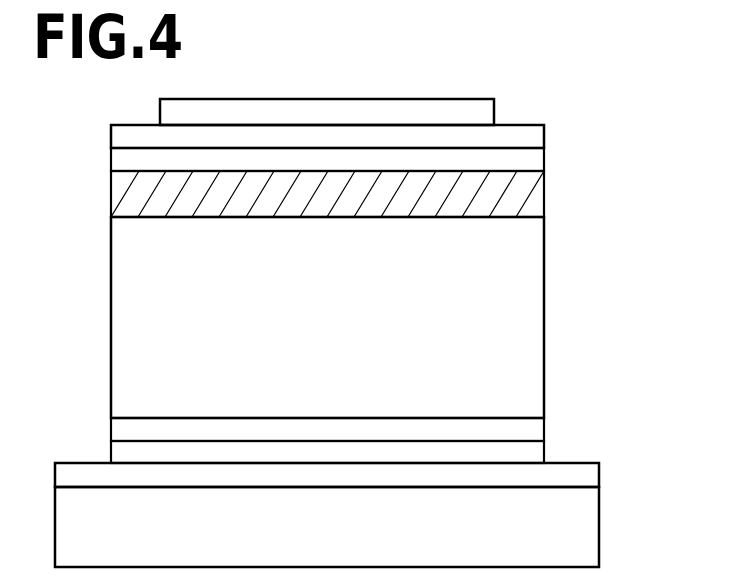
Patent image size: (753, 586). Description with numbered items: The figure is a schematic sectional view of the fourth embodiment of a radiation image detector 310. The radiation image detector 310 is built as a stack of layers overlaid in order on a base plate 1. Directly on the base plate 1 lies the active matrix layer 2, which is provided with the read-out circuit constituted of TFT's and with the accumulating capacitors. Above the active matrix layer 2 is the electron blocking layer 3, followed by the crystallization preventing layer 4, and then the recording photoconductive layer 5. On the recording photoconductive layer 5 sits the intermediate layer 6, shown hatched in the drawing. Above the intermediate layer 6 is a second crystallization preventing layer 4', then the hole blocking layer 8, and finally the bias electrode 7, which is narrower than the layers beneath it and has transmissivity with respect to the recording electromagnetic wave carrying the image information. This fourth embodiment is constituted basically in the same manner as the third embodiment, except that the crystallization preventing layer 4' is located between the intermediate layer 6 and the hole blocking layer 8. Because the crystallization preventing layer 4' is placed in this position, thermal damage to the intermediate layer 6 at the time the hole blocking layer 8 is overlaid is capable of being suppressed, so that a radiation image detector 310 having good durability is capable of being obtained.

The radiation image detector 310 is at (334, 82).
The base plate 1 is at (590, 518).
The active matrix layer 2 is at (590, 477).
The electron blocking layer 3 is at (528, 451).
The crystallization preventing layer 4 is at (372, 423).
The recording photoconductive layer 5 is at (528, 273).
The intermediate layer 6 is at (528, 193).
The crystallization preventing layer 4' is at (374, 166).
The hole blocking layer 8 is at (528, 135).
The bias electrode 7 is at (483, 110).